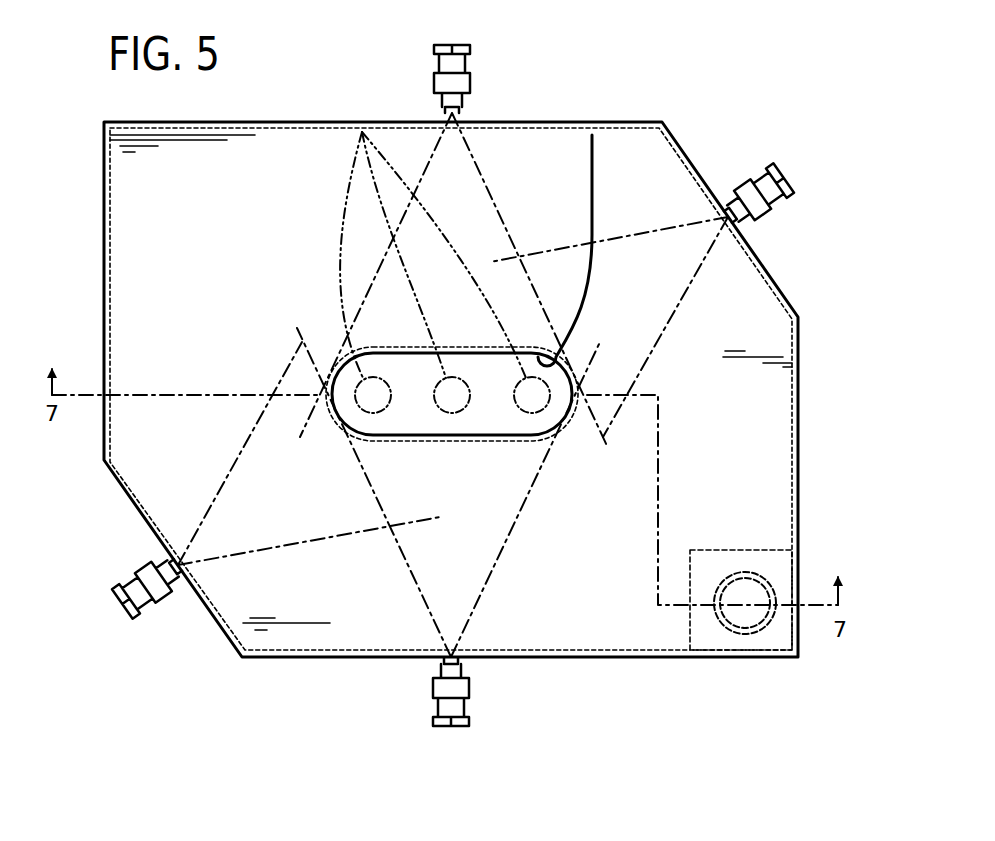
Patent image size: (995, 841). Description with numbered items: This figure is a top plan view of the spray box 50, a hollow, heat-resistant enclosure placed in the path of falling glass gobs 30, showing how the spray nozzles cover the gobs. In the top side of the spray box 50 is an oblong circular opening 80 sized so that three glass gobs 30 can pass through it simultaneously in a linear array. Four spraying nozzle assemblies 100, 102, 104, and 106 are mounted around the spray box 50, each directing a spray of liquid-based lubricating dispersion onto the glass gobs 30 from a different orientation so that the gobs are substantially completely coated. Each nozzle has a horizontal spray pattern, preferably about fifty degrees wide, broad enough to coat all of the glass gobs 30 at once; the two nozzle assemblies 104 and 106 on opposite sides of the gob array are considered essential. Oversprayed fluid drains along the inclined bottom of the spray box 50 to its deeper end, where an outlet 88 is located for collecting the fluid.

The glass gobs 30 is at (362, 132).
The spray box 50 is at (292, 662).
The oblong circular opening 80 is at (592, 135).
The outlet 88 is at (770, 583).
The spraying nozzle assembly 100 is at (162, 598).
The spraying nozzle assembly 102 is at (772, 213).
The spraying nozzle assembly 104 is at (470, 695).
The spraying nozzle assembly 106 is at (470, 85).